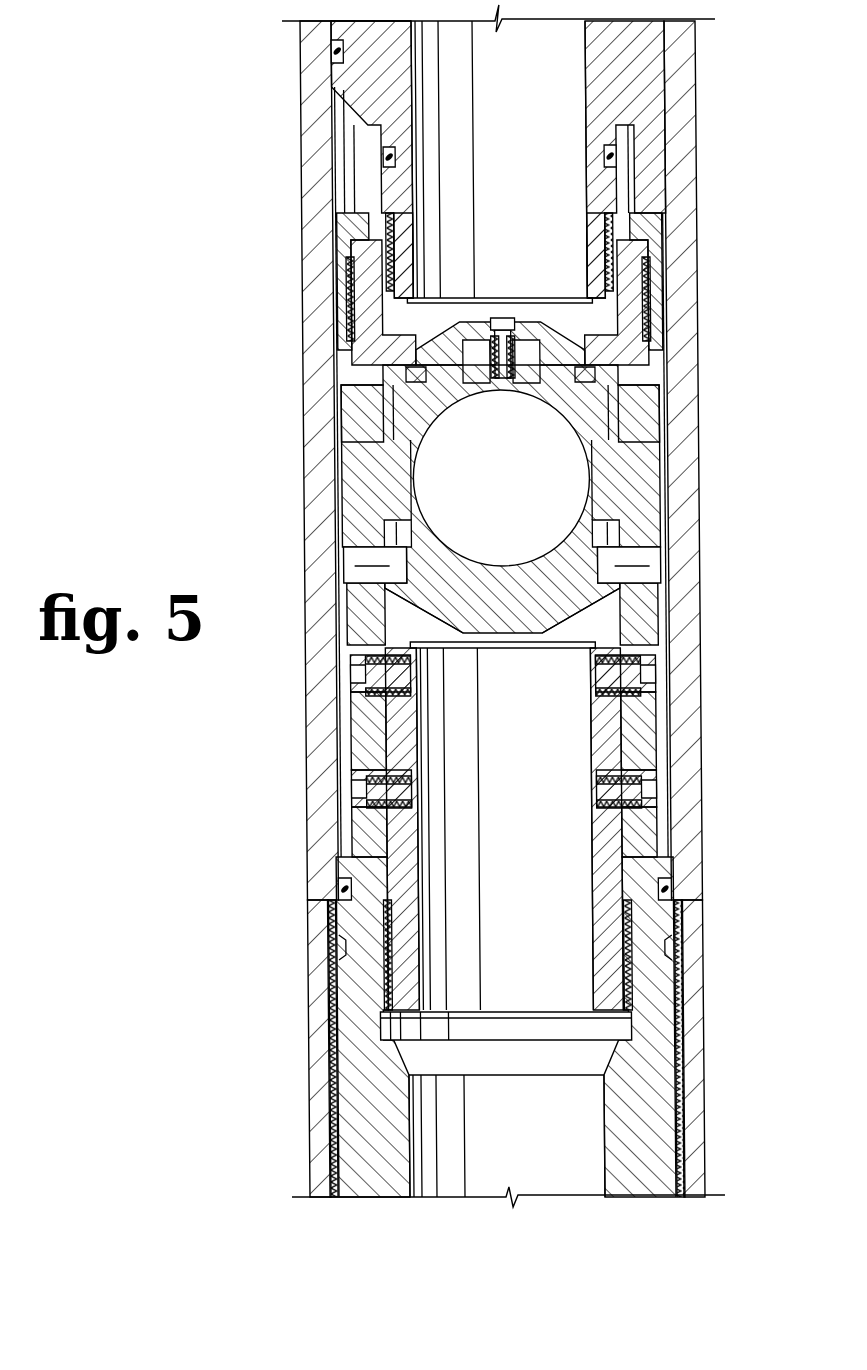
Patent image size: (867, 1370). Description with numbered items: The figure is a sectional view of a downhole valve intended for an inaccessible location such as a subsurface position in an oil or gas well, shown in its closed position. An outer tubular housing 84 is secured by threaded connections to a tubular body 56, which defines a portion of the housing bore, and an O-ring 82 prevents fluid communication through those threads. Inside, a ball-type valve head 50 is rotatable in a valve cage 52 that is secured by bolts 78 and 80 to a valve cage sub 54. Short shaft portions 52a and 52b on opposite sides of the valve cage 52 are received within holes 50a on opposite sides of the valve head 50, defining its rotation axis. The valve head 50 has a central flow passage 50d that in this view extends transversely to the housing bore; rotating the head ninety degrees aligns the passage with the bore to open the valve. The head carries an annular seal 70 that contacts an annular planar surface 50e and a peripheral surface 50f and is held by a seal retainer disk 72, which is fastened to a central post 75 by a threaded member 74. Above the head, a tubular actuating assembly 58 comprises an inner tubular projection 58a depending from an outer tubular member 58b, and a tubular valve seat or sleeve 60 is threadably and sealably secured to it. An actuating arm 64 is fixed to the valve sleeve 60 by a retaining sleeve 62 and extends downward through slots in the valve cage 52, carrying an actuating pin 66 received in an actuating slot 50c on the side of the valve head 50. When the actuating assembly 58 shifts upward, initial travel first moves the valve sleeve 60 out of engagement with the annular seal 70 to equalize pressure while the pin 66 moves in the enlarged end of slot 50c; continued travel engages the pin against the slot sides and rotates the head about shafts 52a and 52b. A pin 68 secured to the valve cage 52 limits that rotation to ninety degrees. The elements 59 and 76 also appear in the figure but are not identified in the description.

The valve head 50 is at (393, 432).
The holes 50a is at (383, 455).
The actuating slot 50c is at (345, 545).
The central flow passage 50d is at (517, 534).
The valve head planar surface 50e is at (448, 395).
The peripheral surface 50f is at (418, 425).
The valve cage 52 is at (356, 532).
The short shaft portion 52a is at (390, 470).
The short shaft portion 52b is at (598, 487).
The valve cage sub 54 is at (400, 845).
The tubular body 56 is at (375, 1060).
The tubular actuating assembly 58 is at (348, 118).
The inner tubular projection 58a is at (365, 228).
The outer tubular member 58b is at (356, 32).
The O-ring seal 59 is at (330, 50).
The tubular valve seat 60 is at (375, 243).
The retaining sleeve 62 is at (345, 300).
The actuating arm 64 is at (640, 368).
The actuating pin 66 is at (388, 618).
The pin 68 is at (341, 565).
The annular seal 70 is at (388, 372).
The seal retainer disk 72 is at (452, 322).
The threaded member 74 is at (505, 318).
The central post 75 is at (556, 320).
The O-ring seal 76 is at (602, 155).
The bolt 78 is at (350, 663).
The bolt 80 is at (350, 778).
The O-ring 82 is at (334, 888).
The outer tubular housing 84 is at (318, 1148).